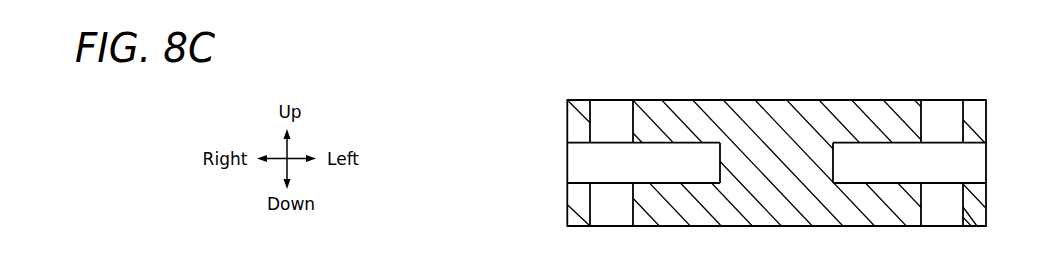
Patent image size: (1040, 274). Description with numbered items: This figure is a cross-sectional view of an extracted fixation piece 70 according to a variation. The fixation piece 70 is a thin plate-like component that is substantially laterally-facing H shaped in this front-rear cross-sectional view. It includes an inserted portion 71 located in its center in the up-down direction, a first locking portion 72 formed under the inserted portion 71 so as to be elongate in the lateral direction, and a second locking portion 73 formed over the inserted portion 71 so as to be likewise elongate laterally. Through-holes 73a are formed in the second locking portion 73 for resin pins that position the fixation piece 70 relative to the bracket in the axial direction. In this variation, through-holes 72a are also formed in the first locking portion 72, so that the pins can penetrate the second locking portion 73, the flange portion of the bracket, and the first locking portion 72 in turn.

The fixation piece 70 is at (780, 93).
The inserted portion 71 is at (555, 143).
The first locking portion 72 is at (555, 183).
The through-holes 72a is at (633, 210).
The second locking portion 73 is at (555, 100).
The through-holes 73a is at (633, 116).